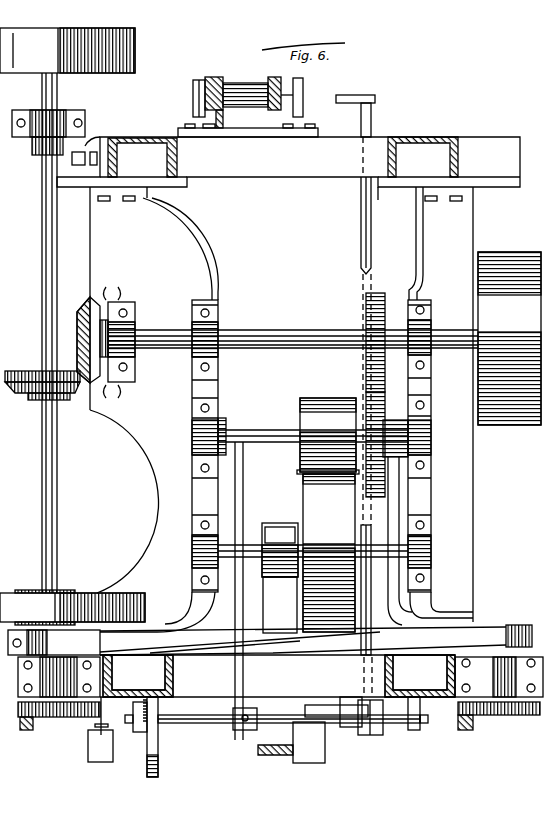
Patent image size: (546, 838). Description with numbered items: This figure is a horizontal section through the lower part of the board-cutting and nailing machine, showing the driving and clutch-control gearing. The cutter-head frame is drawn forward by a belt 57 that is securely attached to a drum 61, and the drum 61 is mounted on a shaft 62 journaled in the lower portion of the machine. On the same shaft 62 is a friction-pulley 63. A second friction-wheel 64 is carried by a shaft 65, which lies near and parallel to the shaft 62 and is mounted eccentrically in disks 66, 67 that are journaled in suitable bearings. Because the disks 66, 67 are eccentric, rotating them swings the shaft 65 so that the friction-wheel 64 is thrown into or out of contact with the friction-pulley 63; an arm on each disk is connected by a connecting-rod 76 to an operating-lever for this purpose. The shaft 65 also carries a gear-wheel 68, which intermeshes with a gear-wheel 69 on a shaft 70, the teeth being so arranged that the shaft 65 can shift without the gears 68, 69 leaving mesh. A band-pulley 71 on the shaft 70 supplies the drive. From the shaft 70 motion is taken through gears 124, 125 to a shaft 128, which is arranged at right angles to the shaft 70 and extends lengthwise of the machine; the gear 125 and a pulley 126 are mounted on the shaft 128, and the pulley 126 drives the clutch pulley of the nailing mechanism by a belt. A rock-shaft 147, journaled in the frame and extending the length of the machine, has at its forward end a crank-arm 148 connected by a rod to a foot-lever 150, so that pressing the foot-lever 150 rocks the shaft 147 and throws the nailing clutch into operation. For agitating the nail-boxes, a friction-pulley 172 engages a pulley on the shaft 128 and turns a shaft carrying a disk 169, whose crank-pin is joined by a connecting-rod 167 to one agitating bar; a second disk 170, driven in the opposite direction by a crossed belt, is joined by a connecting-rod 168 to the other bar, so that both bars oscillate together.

The pulley 126 is at (67, 50).
The shaft 128 is at (57, 482).
The gear 124 is at (94, 299).
The gear 125 is at (25, 391).
The shaft 70 is at (288, 335).
The rock-shaft 147 is at (360, 233).
The gear-wheel 69 is at (366, 313).
The gear-wheel 68 is at (366, 398).
The band-pulley 71 is at (509, 338).
The disk 67 is at (220, 421).
The disk 66 is at (406, 420).
The shaft 65 is at (266, 431).
The friction-wheel 64 is at (328, 436).
The friction-pulley 63 is at (329, 553).
The shaft 62 is at (246, 547).
The drum 61 is at (265, 579).
The belt 57 is at (280, 605).
The connecting-rod 76 is at (241, 478).
The friction-pulley 172 is at (72, 607).
The disk 169 is at (65, 713).
The connecting-rod 167 is at (28, 726).
The disk 170 is at (525, 713).
The connecting-rod 168 is at (470, 727).
The foot-lever 150 is at (291, 742).
The crank-arm 148 is at (344, 727).